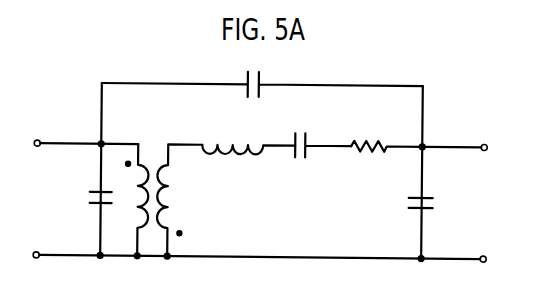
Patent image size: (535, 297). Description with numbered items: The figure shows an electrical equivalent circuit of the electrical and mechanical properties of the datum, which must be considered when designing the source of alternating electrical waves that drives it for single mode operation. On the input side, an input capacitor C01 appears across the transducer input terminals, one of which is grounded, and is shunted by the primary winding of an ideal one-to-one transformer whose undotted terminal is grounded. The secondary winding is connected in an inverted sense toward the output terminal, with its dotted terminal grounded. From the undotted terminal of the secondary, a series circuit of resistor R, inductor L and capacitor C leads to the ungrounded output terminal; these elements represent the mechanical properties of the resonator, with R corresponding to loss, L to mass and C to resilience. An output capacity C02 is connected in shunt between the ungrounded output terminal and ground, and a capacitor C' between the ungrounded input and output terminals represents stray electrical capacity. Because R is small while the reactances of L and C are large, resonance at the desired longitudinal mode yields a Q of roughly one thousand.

The input capacitor C01 is at (83, 197).
The output capacity C02 is at (440, 204).
The capacitor C' is at (262, 75).
The inductor L is at (248, 160).
The capacitor C is at (323, 159).
The resistor R is at (386, 161).